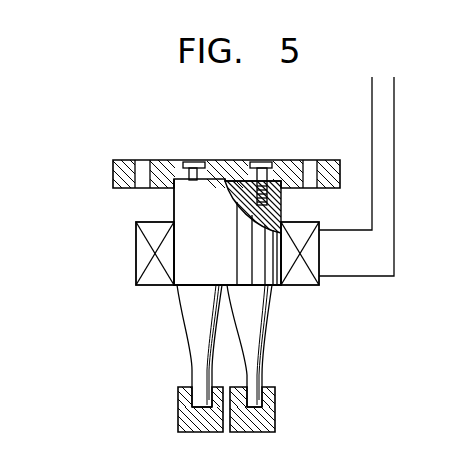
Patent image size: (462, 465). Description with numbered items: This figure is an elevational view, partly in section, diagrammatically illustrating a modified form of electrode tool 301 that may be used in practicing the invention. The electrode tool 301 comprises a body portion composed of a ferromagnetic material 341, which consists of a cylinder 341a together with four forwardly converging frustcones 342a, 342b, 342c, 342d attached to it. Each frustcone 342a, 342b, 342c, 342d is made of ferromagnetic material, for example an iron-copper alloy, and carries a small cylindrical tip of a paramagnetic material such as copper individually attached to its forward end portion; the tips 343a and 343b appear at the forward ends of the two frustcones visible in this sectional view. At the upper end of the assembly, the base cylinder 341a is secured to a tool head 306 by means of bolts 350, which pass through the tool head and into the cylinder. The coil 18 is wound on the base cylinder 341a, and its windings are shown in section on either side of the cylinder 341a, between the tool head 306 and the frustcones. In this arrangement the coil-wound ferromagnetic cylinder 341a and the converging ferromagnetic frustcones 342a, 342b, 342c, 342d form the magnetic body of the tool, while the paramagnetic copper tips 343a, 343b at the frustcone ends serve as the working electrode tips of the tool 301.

The coil 18 is at (137, 242).
The electrode tool 301 is at (234, 305).
The tool head 306 is at (302, 160).
The ferromagnetic material 341 is at (277, 302).
The cylinder 341a is at (177, 288).
The frustcone 342a is at (193, 355).
The frustcone 342b is at (267, 362).
The frustcone 342c is at (213, 345).
The frustcone 342d is at (262, 345).
The cylindrical tip 343a is at (178, 400).
The cylindrical tip 343b is at (275, 417).
The bolts 350 is at (193, 160).